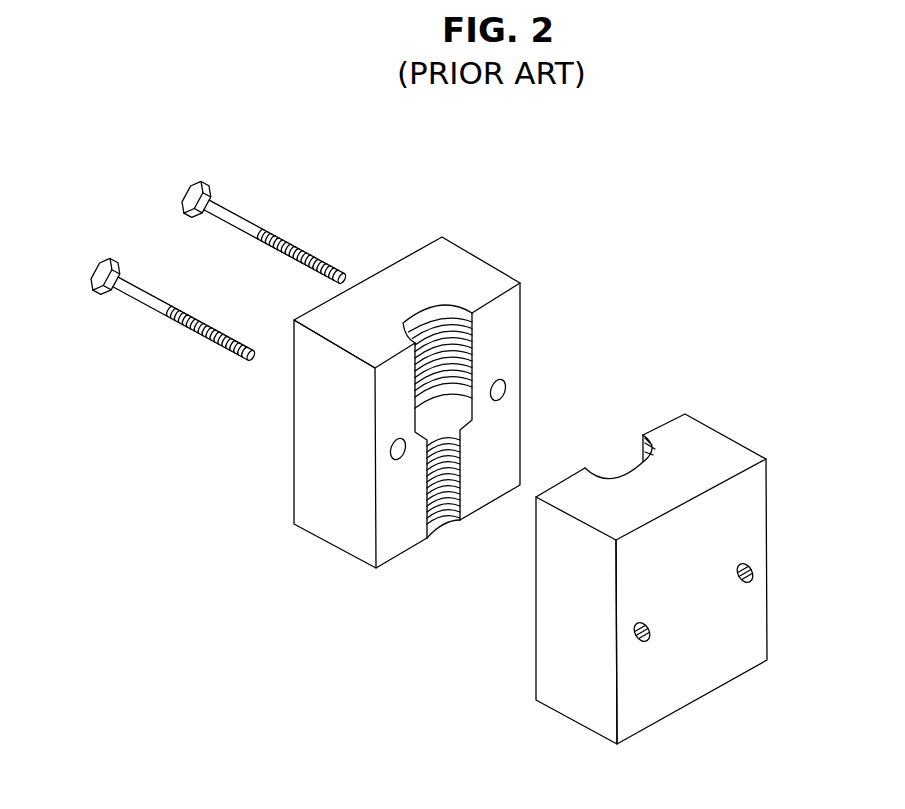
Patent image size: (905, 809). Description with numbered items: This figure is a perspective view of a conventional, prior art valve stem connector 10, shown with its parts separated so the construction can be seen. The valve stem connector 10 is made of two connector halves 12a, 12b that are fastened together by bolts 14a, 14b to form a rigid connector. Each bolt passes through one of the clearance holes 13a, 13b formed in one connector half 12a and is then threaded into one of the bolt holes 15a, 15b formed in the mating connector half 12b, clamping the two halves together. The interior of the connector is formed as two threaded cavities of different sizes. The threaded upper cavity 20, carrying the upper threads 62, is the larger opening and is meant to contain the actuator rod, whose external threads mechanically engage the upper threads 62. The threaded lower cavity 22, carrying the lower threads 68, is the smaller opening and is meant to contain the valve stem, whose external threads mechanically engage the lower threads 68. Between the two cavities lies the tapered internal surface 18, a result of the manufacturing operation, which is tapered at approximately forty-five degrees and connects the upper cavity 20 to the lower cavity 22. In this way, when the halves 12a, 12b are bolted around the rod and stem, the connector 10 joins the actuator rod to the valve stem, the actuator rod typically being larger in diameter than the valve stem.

The valve stem connector 10 is at (156, 430).
The connector half 12a is at (360, 563).
The connector half 12b is at (570, 720).
The clearance hole 13a is at (399, 460).
The clearance hole 13b is at (505, 393).
The bolt 14a is at (102, 268).
The bolt 14b is at (187, 192).
The bolt hole 15a is at (648, 638).
The bolt hole 15b is at (753, 580).
The tapered internal surface 18 is at (460, 413).
The threaded upper cavity 20 is at (450, 303).
The threaded lower cavity 22 is at (442, 522).
The upper threads 62 is at (473, 352).
The lower threads 68 is at (462, 506).